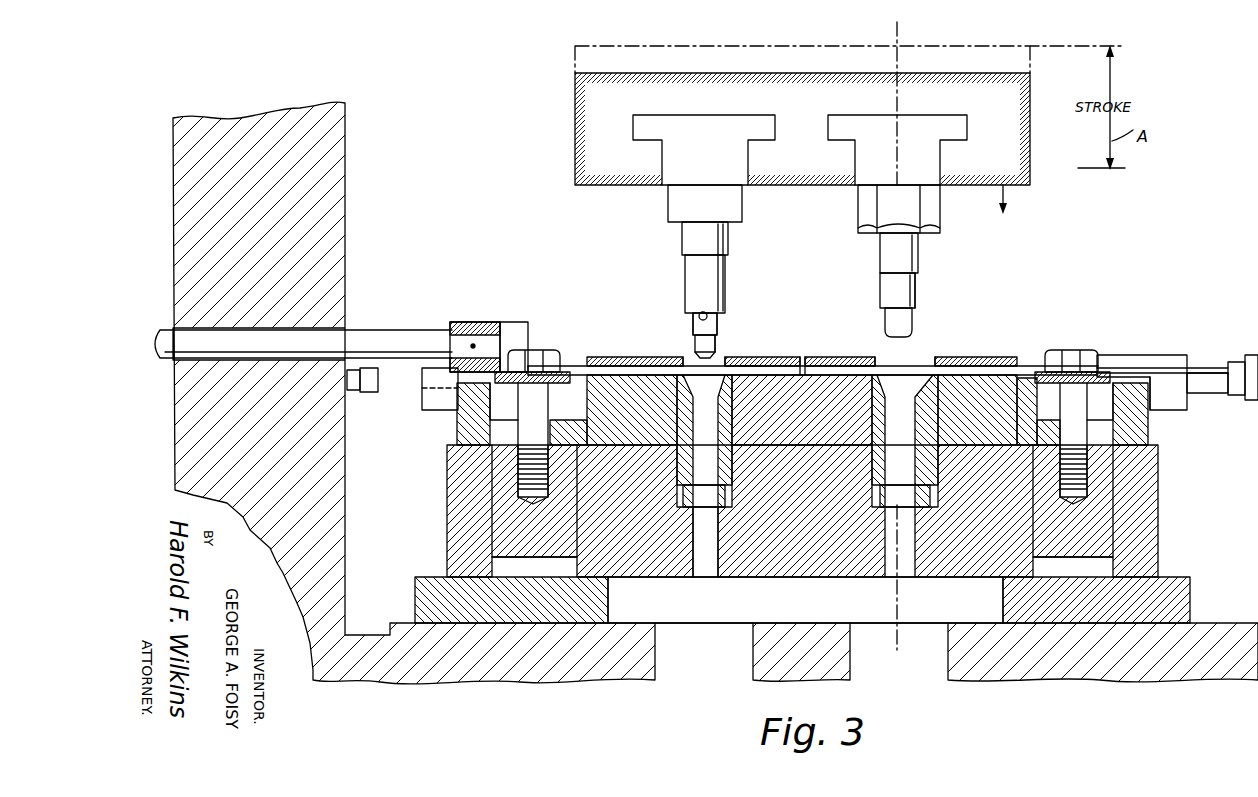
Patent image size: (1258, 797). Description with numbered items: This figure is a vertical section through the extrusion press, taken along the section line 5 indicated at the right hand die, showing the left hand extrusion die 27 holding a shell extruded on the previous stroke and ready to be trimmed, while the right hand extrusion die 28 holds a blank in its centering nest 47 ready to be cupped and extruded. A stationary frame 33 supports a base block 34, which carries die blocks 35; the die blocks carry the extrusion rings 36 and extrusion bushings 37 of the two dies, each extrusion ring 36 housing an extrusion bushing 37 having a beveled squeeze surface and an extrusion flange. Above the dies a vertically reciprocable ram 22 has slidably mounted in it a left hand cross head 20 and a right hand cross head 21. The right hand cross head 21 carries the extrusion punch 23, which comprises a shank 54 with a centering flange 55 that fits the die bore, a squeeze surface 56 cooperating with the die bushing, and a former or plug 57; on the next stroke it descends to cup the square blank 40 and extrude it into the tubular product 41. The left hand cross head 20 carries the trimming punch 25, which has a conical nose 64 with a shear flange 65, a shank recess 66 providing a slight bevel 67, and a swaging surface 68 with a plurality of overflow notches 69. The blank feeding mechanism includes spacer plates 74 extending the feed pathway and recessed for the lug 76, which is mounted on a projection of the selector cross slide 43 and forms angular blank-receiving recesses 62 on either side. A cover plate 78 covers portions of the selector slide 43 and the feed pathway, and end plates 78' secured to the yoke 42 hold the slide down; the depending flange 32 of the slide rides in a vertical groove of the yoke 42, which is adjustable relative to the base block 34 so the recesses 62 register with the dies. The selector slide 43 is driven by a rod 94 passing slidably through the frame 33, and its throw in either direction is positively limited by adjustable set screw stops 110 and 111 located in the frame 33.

The section line 5— 5 is at (902, 645).
The left hand cross head 20 is at (672, 160).
The right hand cross head 21 is at (930, 155).
The ram 22 is at (575, 100).
The extrusion punch 23 is at (913, 261).
The trimming punch 25 is at (706, 271).
The left hand extrusion die 27 is at (730, 361).
The right hand extrusion die 28 is at (878, 353).
The depending flange 32 is at (1207, 385).
The stationary frame 33 is at (320, 188).
The base block 34 is at (463, 507).
The die block 35 is at (605, 398).
The extrusion ring 36 is at (673, 407).
The extrusion bushing 37 is at (727, 435).
The square blank 40 is at (905, 362).
The tubular product 41 is at (703, 510).
The yoke 42 is at (433, 403).
The selector cross slide 43 is at (575, 360).
The centering nest 47 is at (690, 372).
The shank 54 is at (888, 258).
The centering flange 55 is at (912, 305).
The squeeze surface 56 is at (910, 318).
The former or plug 57 is at (890, 325).
The blank-receiving recess 62 is at (803, 360).
The conical nose 64 is at (695, 345).
The shear flange 65 is at (717, 342).
The shank recess 66 is at (691, 322).
The bevel 67 is at (694, 330).
The swaging surface 68 is at (722, 322).
The overflow notch 69 is at (706, 314).
The spacer plate 74 is at (597, 365).
The lug 76 is at (845, 362).
The cover plate 78 is at (577, 338).
The end plate 78' is at (802, 354).
The rod 94 is at (367, 335).
The set screw stop 110 is at (372, 392).
The set screw stop 111 is at (1238, 392).